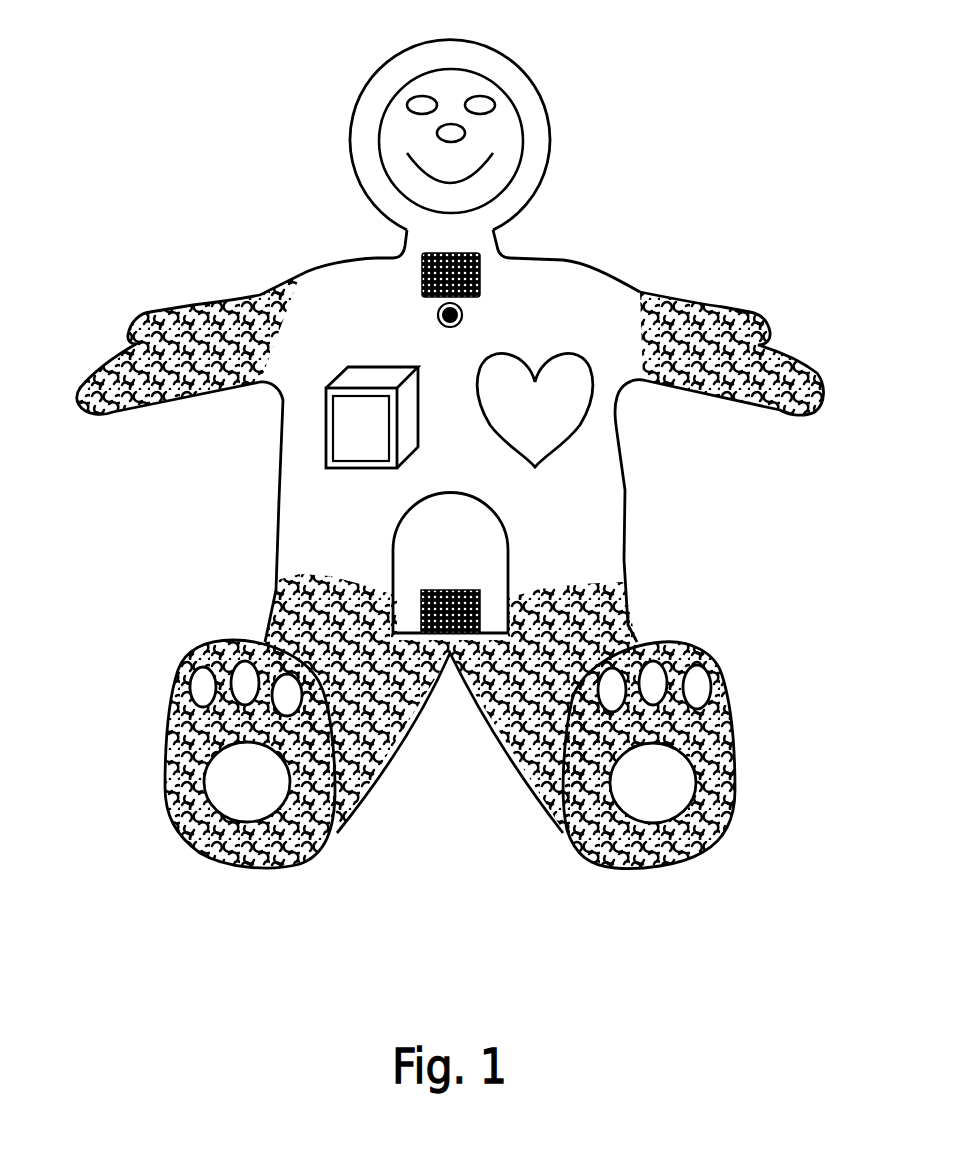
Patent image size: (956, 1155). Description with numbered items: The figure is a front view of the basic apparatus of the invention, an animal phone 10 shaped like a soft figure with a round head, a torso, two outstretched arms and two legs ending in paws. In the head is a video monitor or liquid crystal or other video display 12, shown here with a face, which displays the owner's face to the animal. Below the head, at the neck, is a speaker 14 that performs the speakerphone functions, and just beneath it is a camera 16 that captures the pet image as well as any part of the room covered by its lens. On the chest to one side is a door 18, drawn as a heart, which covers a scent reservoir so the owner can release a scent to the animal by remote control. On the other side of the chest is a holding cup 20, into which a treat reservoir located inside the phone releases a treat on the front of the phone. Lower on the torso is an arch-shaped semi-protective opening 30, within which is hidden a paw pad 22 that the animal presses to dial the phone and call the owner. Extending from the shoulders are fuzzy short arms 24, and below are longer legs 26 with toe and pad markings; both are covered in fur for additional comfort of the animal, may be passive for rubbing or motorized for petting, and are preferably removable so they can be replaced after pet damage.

The animal phone 10 is at (147, 125).
The video display 12 is at (505, 125).
The speaker 14 is at (483, 253).
The camera 16 is at (461, 309).
The door 18 is at (570, 372).
The holding cup 20 is at (358, 433).
The paw pad 22 is at (480, 605).
The fuzzy short arms 24 is at (180, 318).
The longer legs 26 is at (590, 627).
The semi-protective opening 30 is at (508, 567).